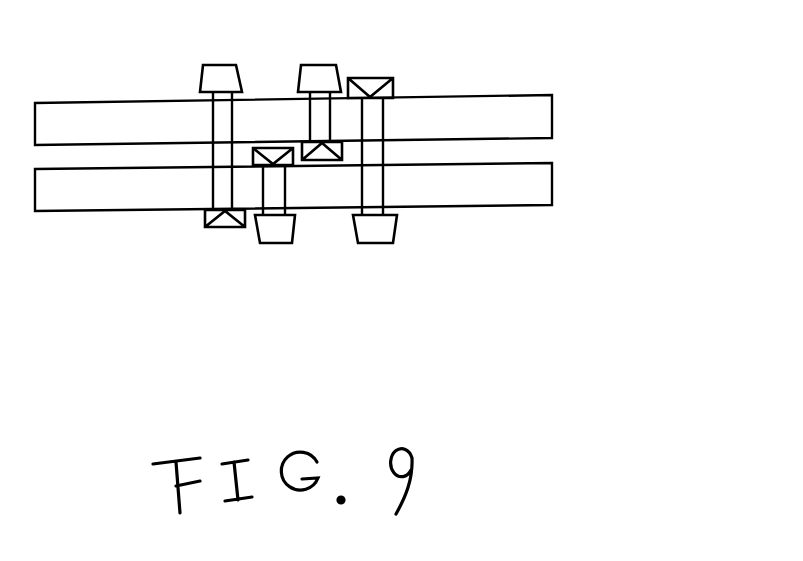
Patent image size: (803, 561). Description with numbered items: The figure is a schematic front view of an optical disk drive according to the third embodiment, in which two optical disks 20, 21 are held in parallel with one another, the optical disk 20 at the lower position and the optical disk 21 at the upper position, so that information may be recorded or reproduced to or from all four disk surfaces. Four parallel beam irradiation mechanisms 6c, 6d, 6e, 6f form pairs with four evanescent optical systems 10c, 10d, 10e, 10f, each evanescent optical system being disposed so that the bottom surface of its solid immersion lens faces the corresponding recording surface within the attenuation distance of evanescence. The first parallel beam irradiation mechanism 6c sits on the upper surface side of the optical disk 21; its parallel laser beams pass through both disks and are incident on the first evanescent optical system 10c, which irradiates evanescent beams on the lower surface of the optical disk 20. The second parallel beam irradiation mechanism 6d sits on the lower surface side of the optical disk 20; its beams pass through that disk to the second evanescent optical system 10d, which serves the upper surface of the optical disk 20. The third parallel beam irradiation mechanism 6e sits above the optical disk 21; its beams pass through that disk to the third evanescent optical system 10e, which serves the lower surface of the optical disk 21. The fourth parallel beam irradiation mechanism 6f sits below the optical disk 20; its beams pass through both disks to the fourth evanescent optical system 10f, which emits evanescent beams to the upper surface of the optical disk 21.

The optical disk 20 is at (562, 181).
The optical disk 21 is at (559, 113).
The first parallel beam irradiation mechanism 6c is at (217, 64).
The second parallel beam irradiation mechanism 6d is at (273, 243).
The third parallel beam irradiation mechanism 6e is at (316, 64).
The fourth parallel beam irradiation mechanism 6f is at (374, 243).
The first evanescent optical system 10c is at (218, 228).
The second evanescent optical system 10d is at (268, 148).
The third evanescent optical system 10e is at (319, 160).
The fourth evanescent optical system 10f is at (372, 78).